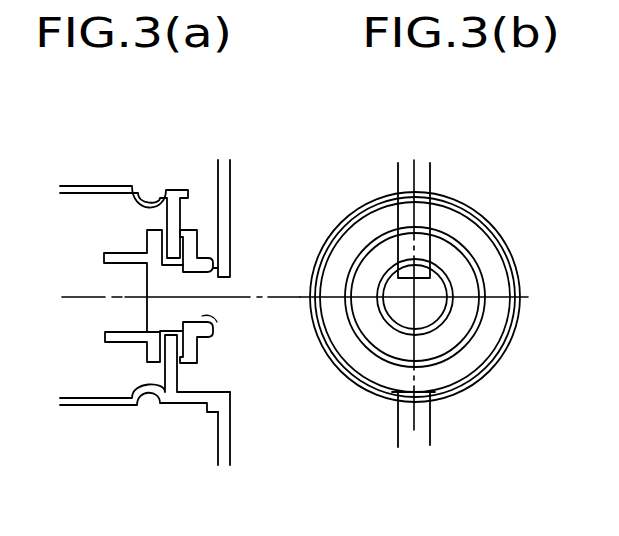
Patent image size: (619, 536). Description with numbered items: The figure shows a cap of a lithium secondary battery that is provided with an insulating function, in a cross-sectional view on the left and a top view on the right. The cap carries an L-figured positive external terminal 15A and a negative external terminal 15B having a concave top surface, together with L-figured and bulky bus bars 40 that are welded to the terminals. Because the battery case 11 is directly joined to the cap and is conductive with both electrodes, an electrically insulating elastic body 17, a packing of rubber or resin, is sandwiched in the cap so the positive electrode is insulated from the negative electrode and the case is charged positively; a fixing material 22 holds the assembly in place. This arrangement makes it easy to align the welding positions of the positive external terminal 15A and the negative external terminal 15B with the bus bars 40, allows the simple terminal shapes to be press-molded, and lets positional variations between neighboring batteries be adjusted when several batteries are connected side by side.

In FIG. 3A, the battery case 11 is at (87, 406).
In FIG. 3B, the battery case 11 is at (510, 258).
In FIG. 3A, the elastic body (packing) 17 is at (160, 230).
In FIG. 3A, the fixing material 22 is at (197, 233).
In FIG. 3A, the bus bar 40 is at (230, 190).
In FIG. 3B, the bus bar 40 is at (398, 180).
In FIG. 3A, the positive external terminal 15A is at (165, 377).
In FIG. 3A, the negative external terminal 15B is at (213, 277).